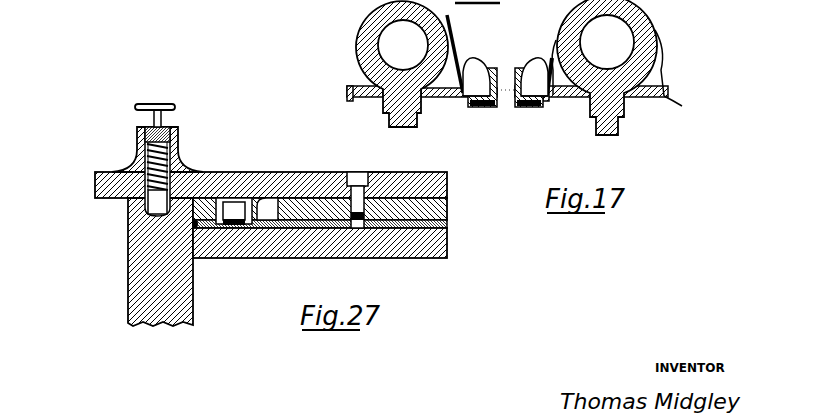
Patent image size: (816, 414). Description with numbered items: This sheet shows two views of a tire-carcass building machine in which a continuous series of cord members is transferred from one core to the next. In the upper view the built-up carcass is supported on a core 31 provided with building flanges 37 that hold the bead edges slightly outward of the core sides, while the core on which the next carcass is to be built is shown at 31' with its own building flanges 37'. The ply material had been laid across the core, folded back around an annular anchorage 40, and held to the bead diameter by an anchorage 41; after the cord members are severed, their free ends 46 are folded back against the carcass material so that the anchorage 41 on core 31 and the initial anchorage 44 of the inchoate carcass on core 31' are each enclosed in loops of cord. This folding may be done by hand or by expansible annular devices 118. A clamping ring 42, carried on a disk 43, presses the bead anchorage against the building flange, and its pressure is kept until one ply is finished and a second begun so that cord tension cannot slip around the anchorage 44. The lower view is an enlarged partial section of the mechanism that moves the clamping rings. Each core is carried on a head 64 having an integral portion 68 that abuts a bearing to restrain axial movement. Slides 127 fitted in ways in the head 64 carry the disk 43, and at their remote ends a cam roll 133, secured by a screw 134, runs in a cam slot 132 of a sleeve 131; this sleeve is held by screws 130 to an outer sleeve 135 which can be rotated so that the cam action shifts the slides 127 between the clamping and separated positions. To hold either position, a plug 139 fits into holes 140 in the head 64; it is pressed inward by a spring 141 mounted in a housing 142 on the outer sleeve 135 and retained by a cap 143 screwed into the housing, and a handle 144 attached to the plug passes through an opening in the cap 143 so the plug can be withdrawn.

In FIG. 17, the core 31 is at (623, 67).
In FIG. 17, the core 31' is at (379, 64).
In FIG. 17, the building flanges 37 is at (591, 112).
In FIG. 17, the building flanges 37' is at (419, 118).
In FIG. 17, the annular anchorage 40 is at (684, 105).
In FIG. 17, the anchorage 41 is at (549, 99).
In FIG. 17, the clamping ring 42 is at (476, 106).
In FIG. 17, the disk 43 is at (508, 98).
In FIG. 17, the initial anchorage 44 is at (468, 92).
In FIG. 17, the free ends 46 is at (454, 47).
In FIG. 17, the expansible annular devices 118 is at (478, 62).
In FIG. 27, the head 64 is at (424, 257).
In FIG. 27, the integral portion 68 is at (167, 330).
In FIG. 27, the slides 127 is at (447, 220).
In FIG. 27, the screws 130 is at (351, 172).
In FIG. 27, the sleeve 131 is at (378, 176).
In FIG. 27, the cam slot 132 is at (268, 186).
In FIG. 27, the cam roll 133 is at (205, 230).
In FIG. 27, the screw 134 is at (224, 178).
In FIG. 27, the outer sleeve 135 is at (432, 185).
In FIG. 27, the plug 139 is at (142, 230).
In FIG. 27, the holes 140 is at (142, 262).
In FIG. 27, the spring 141 is at (172, 144).
In FIG. 27, the housing 142 is at (166, 152).
In FIG. 27, the cap 143 is at (136, 138).
In FIG. 27, the handle 144 is at (164, 120).